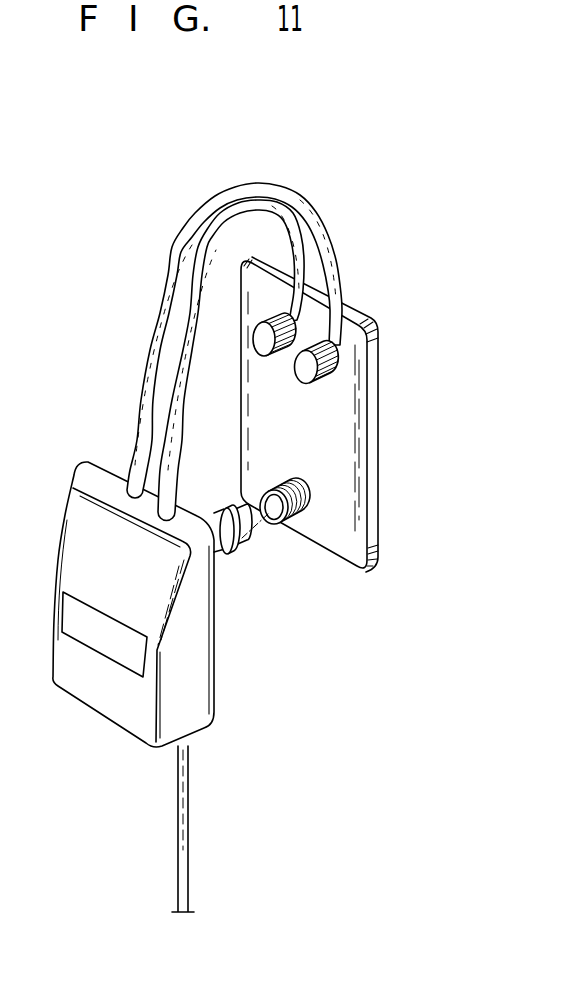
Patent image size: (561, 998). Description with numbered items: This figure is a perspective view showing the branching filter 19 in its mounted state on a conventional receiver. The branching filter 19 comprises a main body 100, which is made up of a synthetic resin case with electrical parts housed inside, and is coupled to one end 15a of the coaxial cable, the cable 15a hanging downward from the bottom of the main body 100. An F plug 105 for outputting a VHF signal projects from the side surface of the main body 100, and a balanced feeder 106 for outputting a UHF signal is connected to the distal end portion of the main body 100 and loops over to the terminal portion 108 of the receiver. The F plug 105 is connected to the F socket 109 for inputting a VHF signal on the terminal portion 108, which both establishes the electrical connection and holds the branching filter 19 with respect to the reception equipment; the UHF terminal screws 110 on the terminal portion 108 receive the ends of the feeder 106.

The branching filter 19 is at (243, 547).
The main body 100 is at (90, 694).
The F plug 105 is at (240, 560).
The balanced feeder 106 is at (323, 221).
The terminal portion 108 is at (374, 481).
The F socket 109 is at (306, 525).
The UHF terminal screws 110 is at (256, 340).
The one end of coaxial cable 15a is at (190, 801).